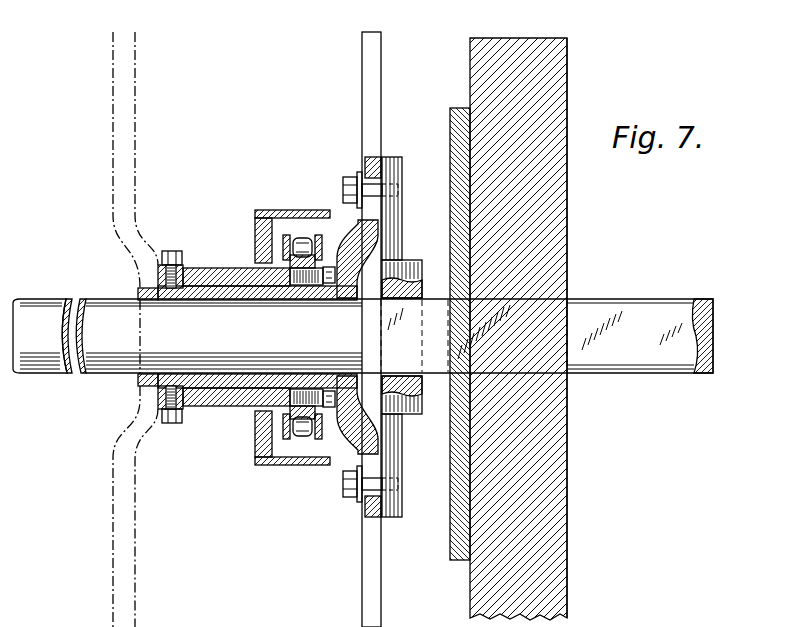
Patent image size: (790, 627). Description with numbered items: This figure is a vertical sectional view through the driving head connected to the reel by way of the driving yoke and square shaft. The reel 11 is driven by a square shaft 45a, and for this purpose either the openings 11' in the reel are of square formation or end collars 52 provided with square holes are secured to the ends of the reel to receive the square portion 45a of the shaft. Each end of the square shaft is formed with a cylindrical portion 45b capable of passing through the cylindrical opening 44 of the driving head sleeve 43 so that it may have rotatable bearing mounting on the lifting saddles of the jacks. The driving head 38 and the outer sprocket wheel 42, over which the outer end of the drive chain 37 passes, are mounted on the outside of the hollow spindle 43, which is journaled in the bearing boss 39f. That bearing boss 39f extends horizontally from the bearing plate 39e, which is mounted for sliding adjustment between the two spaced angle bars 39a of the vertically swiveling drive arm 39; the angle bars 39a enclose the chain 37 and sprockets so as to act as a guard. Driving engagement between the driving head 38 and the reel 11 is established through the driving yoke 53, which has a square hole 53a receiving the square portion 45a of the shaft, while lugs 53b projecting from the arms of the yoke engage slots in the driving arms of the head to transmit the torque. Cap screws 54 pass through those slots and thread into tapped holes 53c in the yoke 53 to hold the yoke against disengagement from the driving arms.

The reel 11 is at (537, 329).
The openings in the reel 11' is at (588, 328).
The drive chain 37 is at (321, 235).
The driving head 38 is at (362, 58).
The drive arm 39 is at (244, 336).
The angle bars 39a is at (285, 208).
The bearing plate 39e is at (264, 210).
The bearing boss 39f is at (197, 270).
The sprocket wheel 42 is at (262, 447).
The hollow spindle 43 is at (232, 290).
The through opening 44 is at (170, 300).
The square shaft 45a is at (636, 357).
The cylindrical portion 45b is at (95, 365).
The end collars 52 is at (450, 556).
The driving yoke 53 is at (410, 254).
The square hole 53a is at (410, 374).
The lugs 53b is at (374, 158).
The tapped holes 53c is at (396, 185).
The cap screws 54 is at (352, 180).